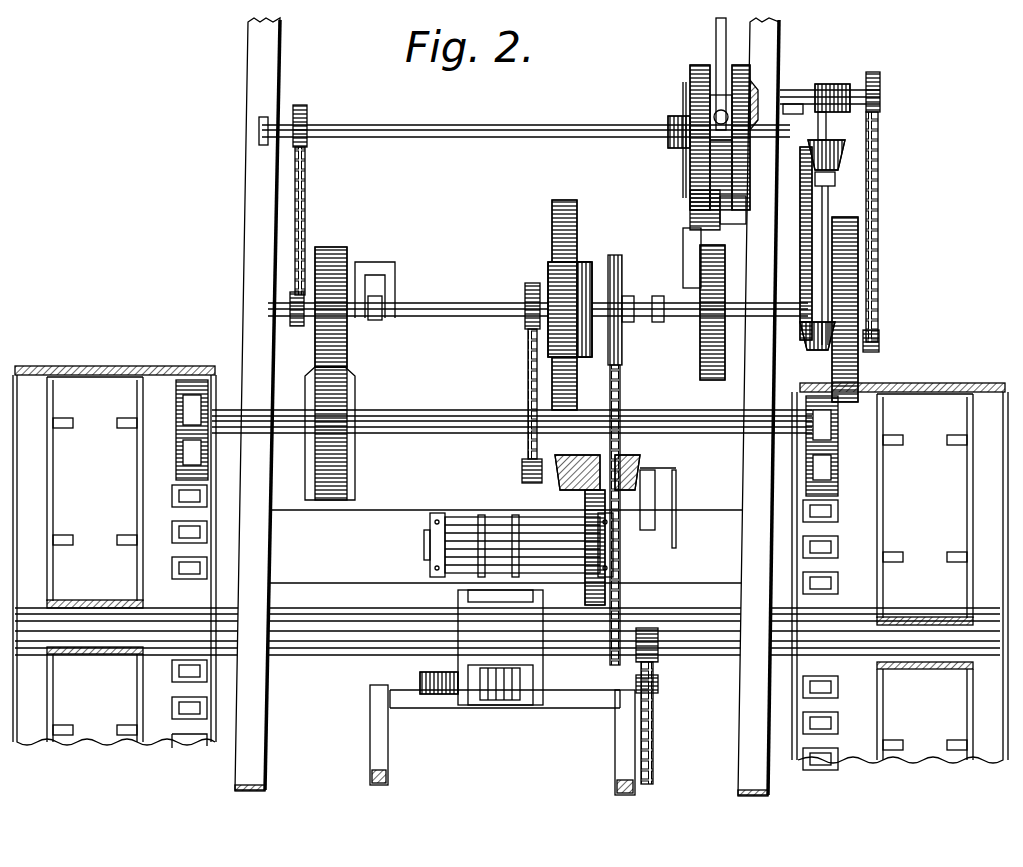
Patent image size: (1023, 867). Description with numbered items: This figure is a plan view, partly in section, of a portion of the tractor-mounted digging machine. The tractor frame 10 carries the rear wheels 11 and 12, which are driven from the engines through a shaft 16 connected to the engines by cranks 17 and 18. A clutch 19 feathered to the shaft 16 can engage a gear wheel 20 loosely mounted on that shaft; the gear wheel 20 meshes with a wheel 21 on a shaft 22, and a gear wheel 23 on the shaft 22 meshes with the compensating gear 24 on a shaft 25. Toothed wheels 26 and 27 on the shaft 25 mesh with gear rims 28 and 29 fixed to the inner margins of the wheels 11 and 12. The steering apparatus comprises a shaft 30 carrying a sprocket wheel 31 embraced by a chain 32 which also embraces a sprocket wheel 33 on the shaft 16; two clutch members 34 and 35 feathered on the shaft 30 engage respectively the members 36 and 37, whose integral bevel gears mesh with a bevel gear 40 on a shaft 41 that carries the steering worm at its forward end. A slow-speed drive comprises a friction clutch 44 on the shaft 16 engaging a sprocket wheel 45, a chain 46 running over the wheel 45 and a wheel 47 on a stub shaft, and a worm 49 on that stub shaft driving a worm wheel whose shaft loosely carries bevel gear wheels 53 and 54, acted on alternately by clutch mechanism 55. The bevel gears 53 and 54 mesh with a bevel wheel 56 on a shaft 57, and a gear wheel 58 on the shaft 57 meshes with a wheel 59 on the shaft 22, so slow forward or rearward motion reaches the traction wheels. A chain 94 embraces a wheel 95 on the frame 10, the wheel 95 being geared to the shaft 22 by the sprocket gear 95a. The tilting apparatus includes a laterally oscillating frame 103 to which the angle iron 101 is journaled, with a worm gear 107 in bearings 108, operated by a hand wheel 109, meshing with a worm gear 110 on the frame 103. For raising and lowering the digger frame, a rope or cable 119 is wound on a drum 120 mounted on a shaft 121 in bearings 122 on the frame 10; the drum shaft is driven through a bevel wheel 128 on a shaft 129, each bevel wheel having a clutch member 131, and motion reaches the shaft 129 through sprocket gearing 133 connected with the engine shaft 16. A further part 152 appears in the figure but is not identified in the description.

The tractor frame 10 is at (272, 81).
The rear wheel 11 is at (928, 382).
The rear wheel 12 is at (100, 366).
The shaft 16 is at (448, 303).
The crank 17 is at (642, 300).
The crank 18 is at (383, 263).
The clutch 19 is at (590, 264).
The gear wheel 20 is at (548, 272).
The gear wheel 21 is at (552, 215).
The shaft 22 is at (377, 318).
The gear wheel 23 is at (328, 247).
The compensating gear 24 is at (345, 392).
The shaft 25 is at (420, 420).
The toothed wheel 26 is at (838, 440).
The toothed wheel 27 is at (194, 380).
The gear rim 28 is at (860, 392).
The gear rim 29 is at (175, 372).
The shaft 30 is at (392, 126).
The sprocket wheel 31 is at (307, 118).
The chain 32 is at (306, 176).
The sprocket wheel 33 is at (290, 300).
The clutch member 34 is at (757, 96).
The clutch member 35 is at (710, 110).
The clutch member 36 is at (742, 65).
The clutch member 37 is at (696, 65).
The bevel gear 40 is at (668, 126).
The shaft 41 is at (716, 28).
The friction clutch 44 is at (858, 290).
The sprocket wheel 45 is at (879, 342).
The chain 46 is at (878, 212).
The sprocket wheel 47 is at (880, 74).
The worm 49 is at (830, 84).
The bevel gear wheel 53 is at (836, 142).
The bevel gear wheel 54 is at (806, 345).
The clutch mechanism 55 is at (835, 178).
The bevel wheel 56 is at (800, 210).
The shaft 57 is at (683, 240).
The gear wheel 58 is at (690, 212).
The gear wheel 59 is at (700, 356).
The chain 94 is at (653, 730).
The sprocket wheel 95 is at (658, 646).
The sprocket gear 95a is at (622, 362).
The angle iron 101 is at (370, 740).
The tilting frame 103 is at (558, 708).
The worm gear 107 is at (488, 700).
The bearings 108 is at (500, 647).
The hand wheel 109 is at (658, 684).
The worm gear 110 is at (434, 680).
The rope or cable 119 is at (515, 517).
The drum 120 is at (460, 517).
The shaft 121 is at (424, 548).
The bearings 122 is at (430, 530).
The bevel wheel 128 is at (575, 455).
The shaft 129 is at (658, 462).
The clutch member 131 is at (590, 458).
The sprocket gearing 133 is at (528, 366).
The bevel gear 152 is at (628, 455).